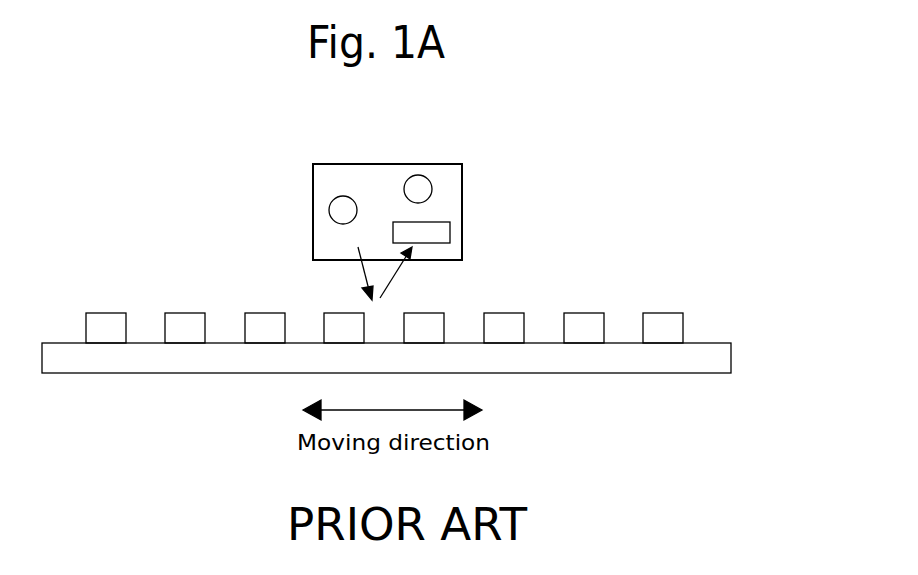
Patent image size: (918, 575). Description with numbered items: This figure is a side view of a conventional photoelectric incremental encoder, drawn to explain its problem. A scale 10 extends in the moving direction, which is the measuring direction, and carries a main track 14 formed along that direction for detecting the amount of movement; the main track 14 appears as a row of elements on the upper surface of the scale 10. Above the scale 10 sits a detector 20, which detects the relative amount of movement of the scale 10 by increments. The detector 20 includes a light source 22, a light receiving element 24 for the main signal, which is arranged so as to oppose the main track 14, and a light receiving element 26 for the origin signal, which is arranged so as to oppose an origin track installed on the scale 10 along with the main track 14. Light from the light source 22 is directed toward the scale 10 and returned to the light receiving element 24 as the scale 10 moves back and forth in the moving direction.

The scale 10 is at (731, 358).
The main track 14 is at (98, 313).
The detector 20 is at (313, 164).
The light source 22 is at (329, 210).
The light receiving element for main signal 24 is at (451, 228).
The light receiving element for origin signal 26 is at (420, 175).